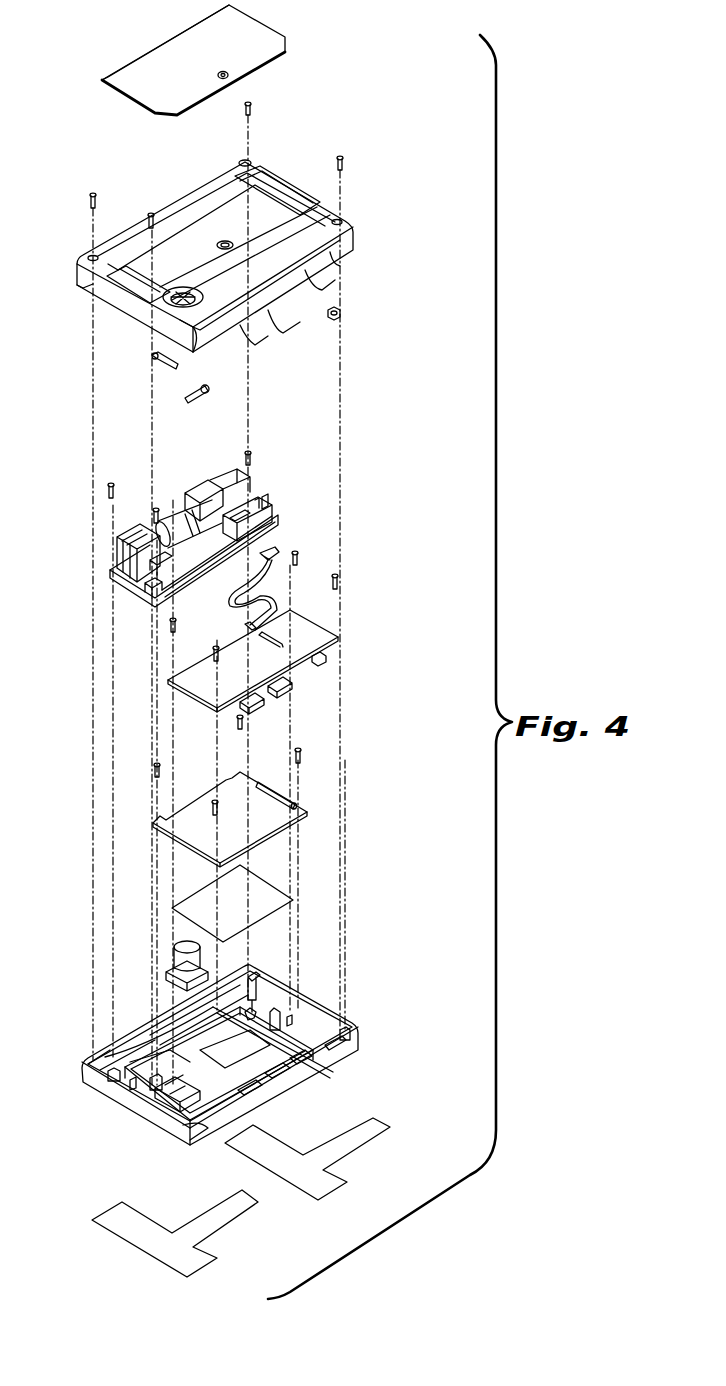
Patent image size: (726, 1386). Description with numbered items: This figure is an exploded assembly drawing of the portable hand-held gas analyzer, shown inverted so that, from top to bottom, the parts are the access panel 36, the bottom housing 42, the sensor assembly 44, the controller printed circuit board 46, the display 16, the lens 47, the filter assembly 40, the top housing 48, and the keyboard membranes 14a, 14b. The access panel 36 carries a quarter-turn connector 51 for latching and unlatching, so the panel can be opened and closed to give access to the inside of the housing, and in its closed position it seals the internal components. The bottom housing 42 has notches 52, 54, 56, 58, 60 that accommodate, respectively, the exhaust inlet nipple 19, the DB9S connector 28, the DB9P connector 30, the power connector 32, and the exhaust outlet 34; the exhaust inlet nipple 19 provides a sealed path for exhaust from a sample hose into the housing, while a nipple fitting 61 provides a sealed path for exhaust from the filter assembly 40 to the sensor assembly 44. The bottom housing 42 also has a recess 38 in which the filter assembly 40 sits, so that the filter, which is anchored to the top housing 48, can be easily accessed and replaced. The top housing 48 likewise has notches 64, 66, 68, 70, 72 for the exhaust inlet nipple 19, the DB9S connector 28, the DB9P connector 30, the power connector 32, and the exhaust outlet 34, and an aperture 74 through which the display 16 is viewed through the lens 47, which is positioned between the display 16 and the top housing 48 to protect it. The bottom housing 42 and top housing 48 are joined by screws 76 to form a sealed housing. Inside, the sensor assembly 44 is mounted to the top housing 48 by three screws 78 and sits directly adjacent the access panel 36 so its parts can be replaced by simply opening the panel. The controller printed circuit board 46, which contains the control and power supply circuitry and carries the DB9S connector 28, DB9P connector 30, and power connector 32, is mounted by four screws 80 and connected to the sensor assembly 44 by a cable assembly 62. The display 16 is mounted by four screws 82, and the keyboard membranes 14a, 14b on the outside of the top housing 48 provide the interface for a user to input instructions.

The access panel 36 is at (262, 28).
The quarter-turn connector 51 is at (228, 76).
The screws 76 is at (244, 108).
The bottom housing 42 is at (347, 217).
The notch 60 is at (340, 265).
The notch 58 is at (320, 283).
The exhaust outlet 34 is at (342, 314).
The recess 38 is at (165, 305).
The nipple fitting 61 is at (150, 357).
The notch 52 is at (200, 340).
The notch 54 is at (254, 320).
The notch 56 is at (277, 300).
The exhaust inlet nipple 19 is at (193, 400).
The screws 78 is at (246, 456).
The sensor assembly 44 is at (278, 518).
The screws 80 is at (298, 559).
The cable assembly 62 is at (275, 598).
The controller printed circuit board 46 is at (340, 637).
The power connector 32 is at (322, 662).
The DB9P connector 30 is at (285, 690).
The DB9S connector 28 is at (258, 706).
The screws 82 is at (296, 754).
The display 16 is at (283, 838).
The lens 47 is at (268, 918).
The filter assembly 40 is at (175, 960).
The top housing 48 is at (357, 1040).
The notch 72 is at (350, 1052).
The notch 70 is at (314, 1060).
The notch 68 is at (282, 1080).
The notch 66 is at (248, 1097).
The notch 64 is at (200, 1138).
The aperture 74 is at (228, 1078).
The keyboard membrane 14a is at (110, 1217).
The keyboard membrane 14b is at (356, 1150).